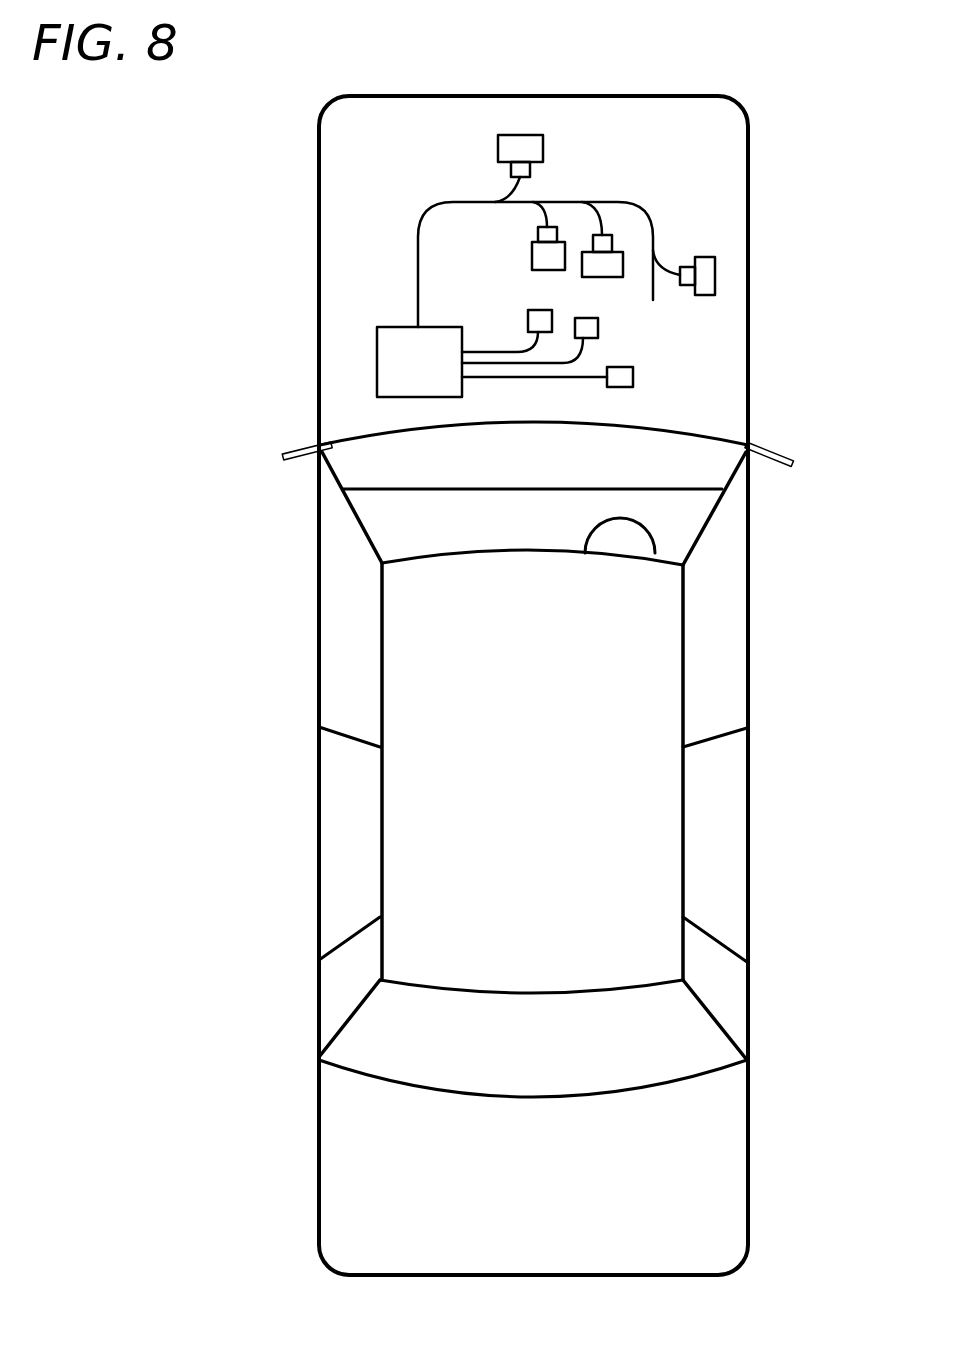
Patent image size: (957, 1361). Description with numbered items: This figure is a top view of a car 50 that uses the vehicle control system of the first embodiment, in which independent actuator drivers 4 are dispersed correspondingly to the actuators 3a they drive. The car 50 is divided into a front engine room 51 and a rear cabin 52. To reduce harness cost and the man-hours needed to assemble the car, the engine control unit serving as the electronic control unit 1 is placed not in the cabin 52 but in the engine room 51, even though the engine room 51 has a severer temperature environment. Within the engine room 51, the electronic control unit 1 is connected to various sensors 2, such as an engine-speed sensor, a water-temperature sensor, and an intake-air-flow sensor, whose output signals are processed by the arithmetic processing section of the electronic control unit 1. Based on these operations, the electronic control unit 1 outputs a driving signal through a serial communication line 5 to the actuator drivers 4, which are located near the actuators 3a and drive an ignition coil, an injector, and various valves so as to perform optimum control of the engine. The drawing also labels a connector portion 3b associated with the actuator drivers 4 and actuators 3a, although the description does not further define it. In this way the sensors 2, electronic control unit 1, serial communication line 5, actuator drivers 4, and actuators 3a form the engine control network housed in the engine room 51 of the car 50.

The electronic control unit 1 is at (397, 327).
The sensors 2 is at (633, 373).
The actuators 3a is at (543, 145).
The connector 3b is at (451, 180).
The actuator drivers 4 is at (510, 168).
The serial communication line 5 is at (637, 205).
The car 50 is at (547, 95).
The engine room 51 is at (735, 335).
The cabin 52 is at (720, 657).